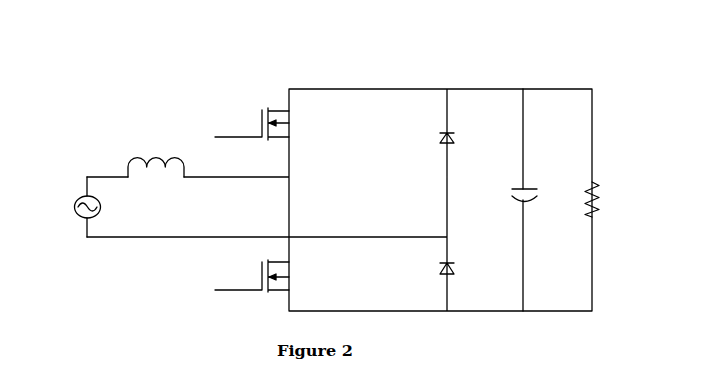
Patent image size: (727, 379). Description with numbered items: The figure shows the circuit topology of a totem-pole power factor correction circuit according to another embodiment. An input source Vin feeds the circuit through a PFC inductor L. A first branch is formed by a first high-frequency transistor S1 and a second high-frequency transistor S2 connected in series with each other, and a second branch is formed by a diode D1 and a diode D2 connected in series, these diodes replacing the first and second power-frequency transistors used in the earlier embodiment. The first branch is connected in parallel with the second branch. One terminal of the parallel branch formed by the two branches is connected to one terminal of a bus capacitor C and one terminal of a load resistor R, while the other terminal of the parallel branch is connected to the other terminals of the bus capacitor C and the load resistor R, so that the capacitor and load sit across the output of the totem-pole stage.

The input voltage source Vin is at (69, 207).
The PFC inductor L is at (156, 161).
The first high-frequency transistor S1 is at (252, 124).
The second high-frequency transistor S2 is at (252, 276).
The diode D1 is at (429, 140).
The diode D2 is at (429, 269).
The bus capacitor C is at (534, 197).
The load resistor R is at (605, 199).